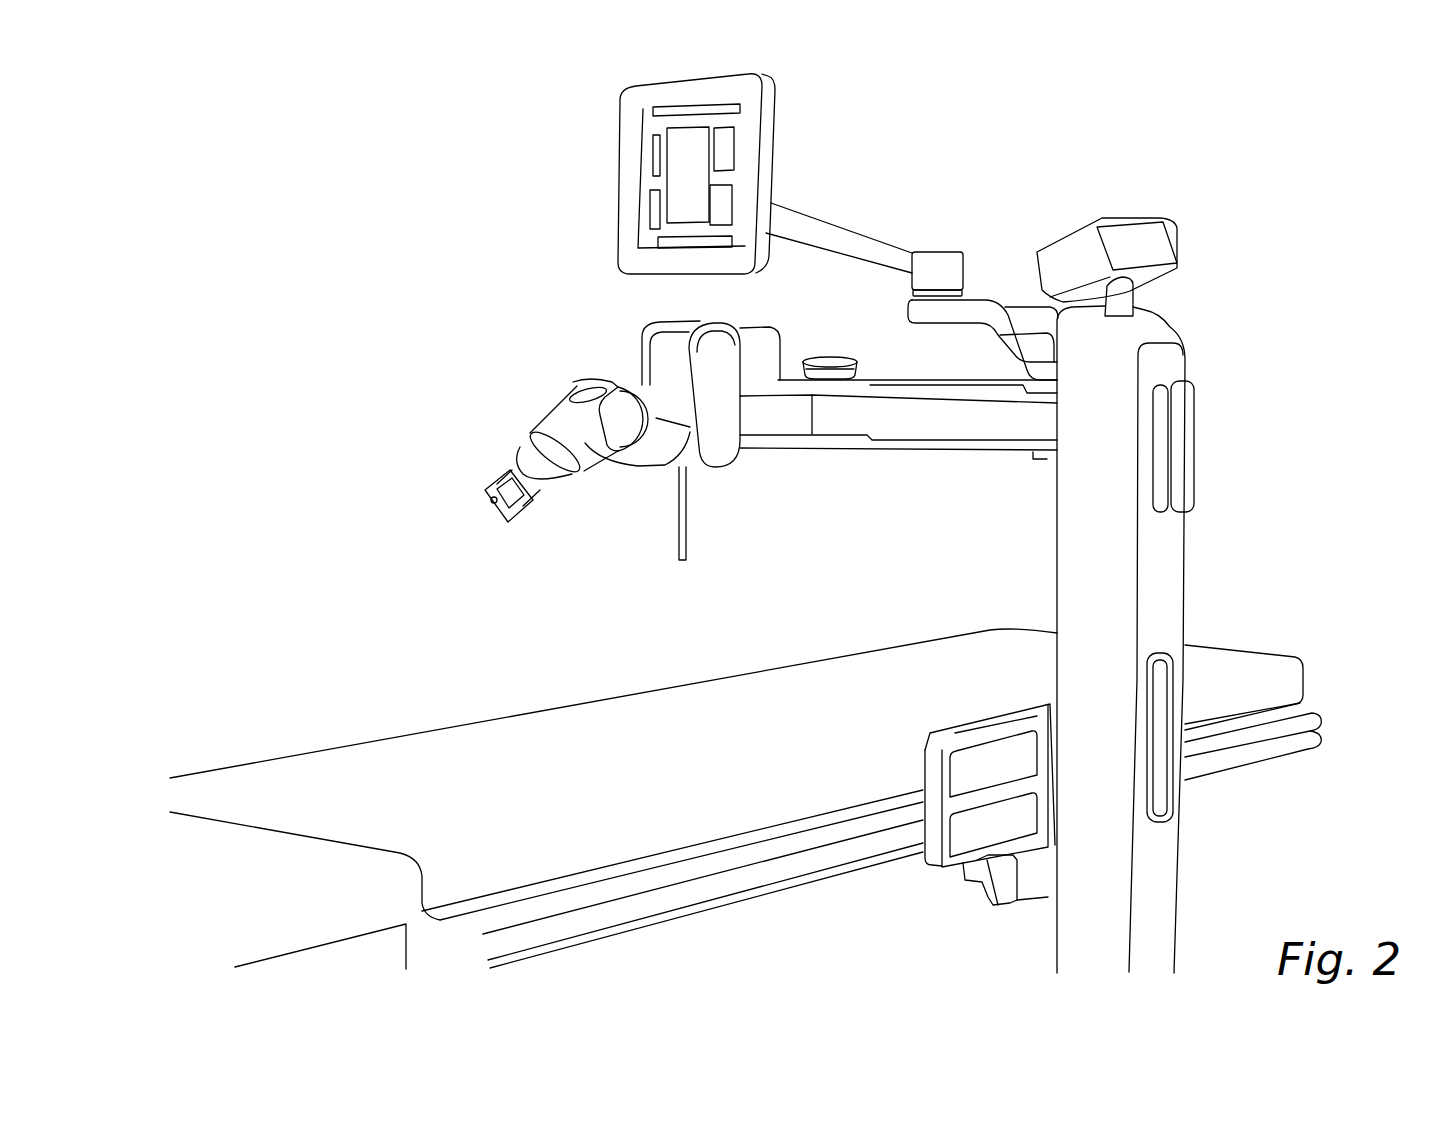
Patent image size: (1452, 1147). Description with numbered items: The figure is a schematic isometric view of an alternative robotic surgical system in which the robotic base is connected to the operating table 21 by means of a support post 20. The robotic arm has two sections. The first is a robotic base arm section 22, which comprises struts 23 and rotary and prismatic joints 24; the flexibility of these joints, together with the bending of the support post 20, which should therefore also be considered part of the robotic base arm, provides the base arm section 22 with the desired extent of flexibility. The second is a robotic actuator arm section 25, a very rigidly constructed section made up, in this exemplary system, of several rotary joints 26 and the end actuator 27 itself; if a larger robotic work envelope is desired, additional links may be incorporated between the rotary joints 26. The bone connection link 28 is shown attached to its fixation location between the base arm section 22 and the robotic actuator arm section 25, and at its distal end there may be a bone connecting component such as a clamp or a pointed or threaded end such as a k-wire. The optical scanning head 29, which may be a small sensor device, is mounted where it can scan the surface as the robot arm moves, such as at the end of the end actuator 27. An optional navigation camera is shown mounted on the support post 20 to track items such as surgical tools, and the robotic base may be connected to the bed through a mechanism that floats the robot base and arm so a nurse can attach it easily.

The support post 20 is at (1187, 562).
The operating table 21 is at (1252, 650).
The robotic base arm section 22 is at (1057, 467).
The struts 23 is at (788, 380).
The rotary and prismatic joints 24 is at (835, 357).
The robotic actuator arm section 25 is at (675, 473).
The rotary joints 26 is at (640, 390).
The end actuator 27 is at (500, 522).
The bone connection link 28 is at (688, 547).
The optical scanning head 29 is at (493, 500).